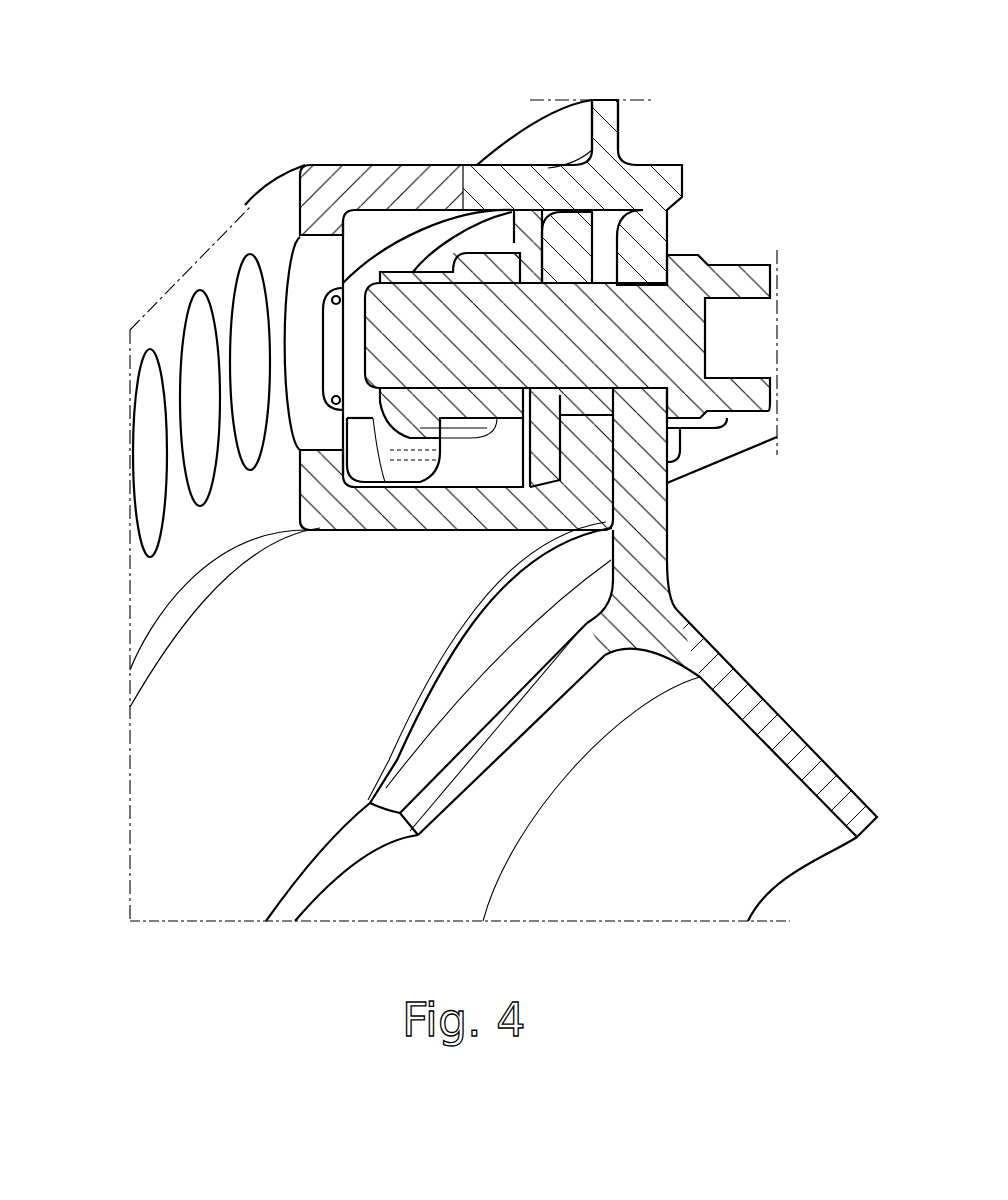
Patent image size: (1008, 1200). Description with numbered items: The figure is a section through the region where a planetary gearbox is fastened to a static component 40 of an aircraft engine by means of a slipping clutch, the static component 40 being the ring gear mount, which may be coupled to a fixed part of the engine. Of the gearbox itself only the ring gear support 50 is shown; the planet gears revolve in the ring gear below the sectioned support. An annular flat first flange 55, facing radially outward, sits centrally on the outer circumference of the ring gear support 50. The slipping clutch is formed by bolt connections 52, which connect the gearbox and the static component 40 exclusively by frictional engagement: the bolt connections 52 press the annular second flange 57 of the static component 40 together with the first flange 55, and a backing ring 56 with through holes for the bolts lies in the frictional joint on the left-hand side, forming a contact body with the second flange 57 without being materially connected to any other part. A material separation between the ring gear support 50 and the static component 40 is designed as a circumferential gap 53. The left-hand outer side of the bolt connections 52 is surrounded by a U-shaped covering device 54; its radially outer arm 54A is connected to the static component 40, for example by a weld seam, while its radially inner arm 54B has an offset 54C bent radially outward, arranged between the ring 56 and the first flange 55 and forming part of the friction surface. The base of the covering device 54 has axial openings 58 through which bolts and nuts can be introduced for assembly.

The static component 40 is at (605, 108).
The ring gear support 50 is at (798, 750).
The bolt connections 52 is at (668, 330).
The gap 53 is at (603, 405).
The covering device 54 is at (417, 374).
The arm 54A is at (400, 185).
The other arm 54B is at (300, 512).
The offset 54C is at (603, 488).
The first flange 55 is at (650, 552).
The backing ring 56 is at (540, 215).
The second flange 57 is at (598, 237).
The openings 58 is at (200, 292).